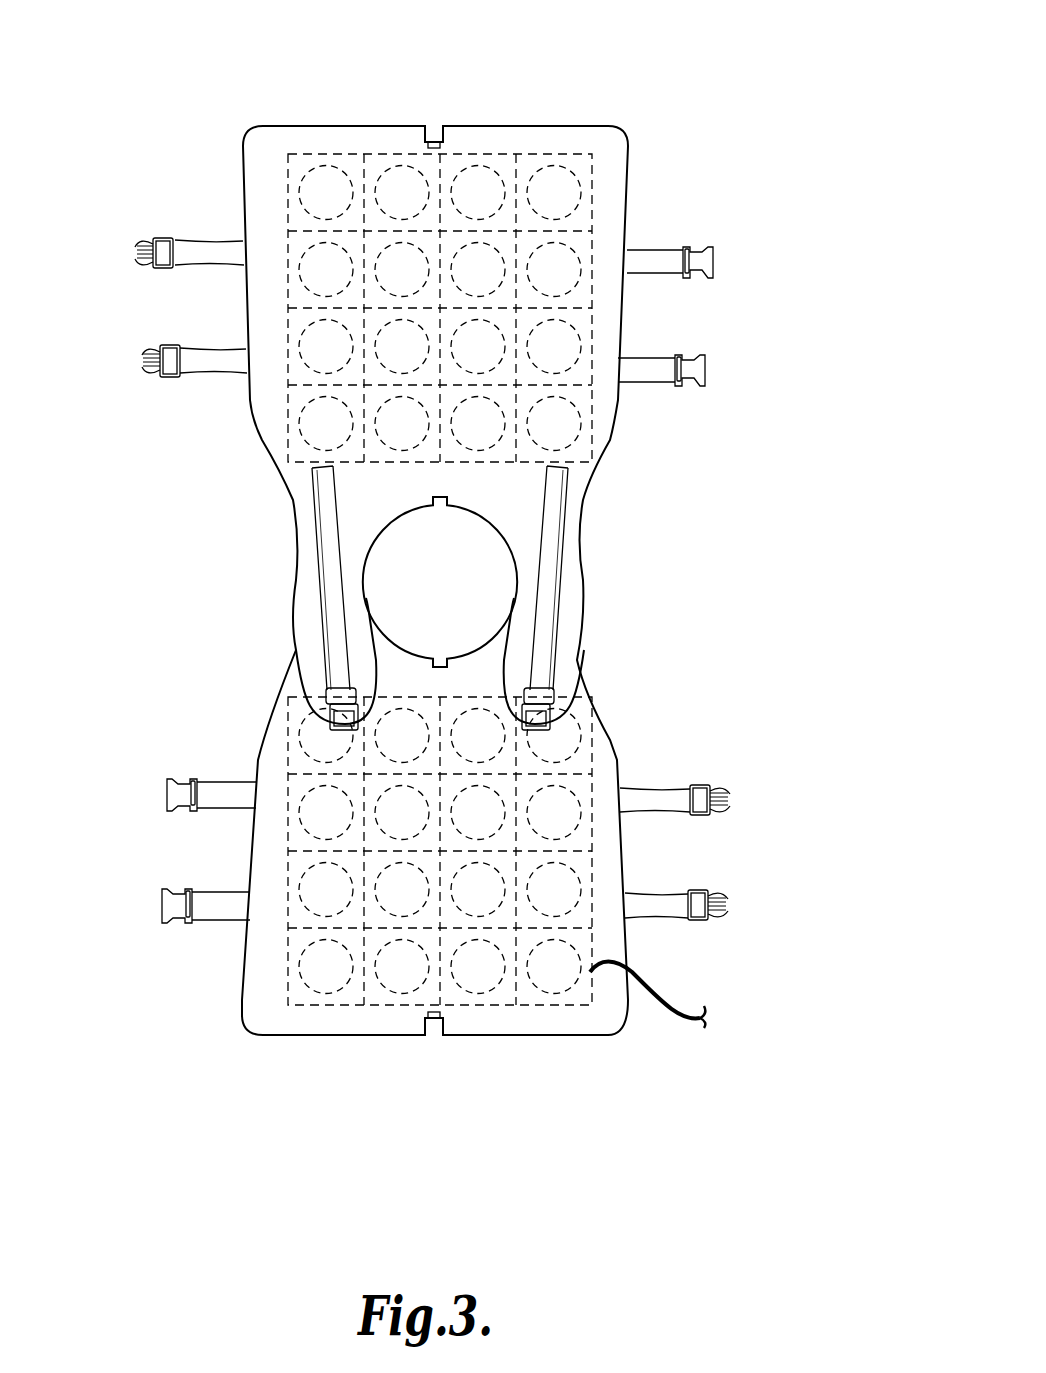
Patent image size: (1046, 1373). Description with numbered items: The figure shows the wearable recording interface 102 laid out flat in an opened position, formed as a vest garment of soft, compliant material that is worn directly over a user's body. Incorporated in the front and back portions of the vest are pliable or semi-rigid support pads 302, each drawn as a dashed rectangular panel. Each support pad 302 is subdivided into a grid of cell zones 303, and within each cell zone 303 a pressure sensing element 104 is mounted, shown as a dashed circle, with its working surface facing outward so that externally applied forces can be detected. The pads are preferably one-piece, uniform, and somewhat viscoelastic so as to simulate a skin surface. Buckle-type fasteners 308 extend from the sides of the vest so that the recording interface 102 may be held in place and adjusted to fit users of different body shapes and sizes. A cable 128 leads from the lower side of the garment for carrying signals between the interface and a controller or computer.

The wearable recording interface 102 is at (702, 88).
The pressure sensing element 104 is at (325, 200).
The cable 128 is at (648, 990).
The support pad 302 is at (595, 250).
The cell zone 303 is at (526, 165).
The buckle-type fastener 308 is at (662, 786).